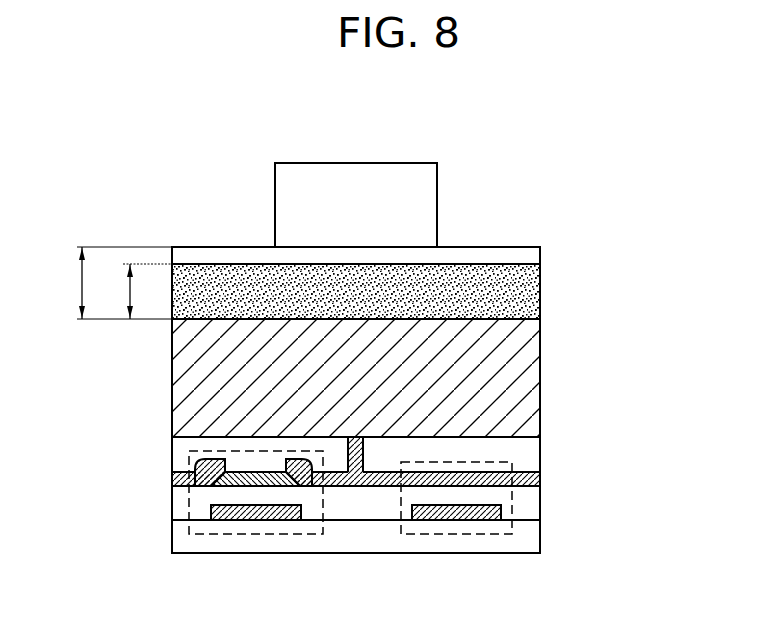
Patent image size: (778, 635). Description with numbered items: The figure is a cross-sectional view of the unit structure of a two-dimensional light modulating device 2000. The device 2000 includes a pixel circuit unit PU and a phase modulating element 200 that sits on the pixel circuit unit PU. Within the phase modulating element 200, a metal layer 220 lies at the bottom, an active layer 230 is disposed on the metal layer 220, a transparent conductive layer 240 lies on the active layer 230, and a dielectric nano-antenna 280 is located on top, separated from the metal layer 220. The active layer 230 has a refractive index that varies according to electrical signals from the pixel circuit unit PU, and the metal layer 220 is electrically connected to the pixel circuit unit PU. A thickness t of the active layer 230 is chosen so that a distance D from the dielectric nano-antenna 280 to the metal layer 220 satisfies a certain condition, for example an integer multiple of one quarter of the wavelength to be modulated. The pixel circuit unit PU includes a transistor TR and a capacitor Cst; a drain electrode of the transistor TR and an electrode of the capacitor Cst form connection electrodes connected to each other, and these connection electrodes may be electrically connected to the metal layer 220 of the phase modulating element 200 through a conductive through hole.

The 2D light modulating device 2000 is at (655, 132).
The dielectric nano-antenna 280 is at (423, 203).
The transparent conductive layer 240 is at (530, 256).
The active layer 230 is at (530, 292).
The metal layer 220 is at (522, 378).
The phase modulating element 200 is at (627, 175).
The pixel circuit unit PU is at (627, 435).
The transistor TR is at (256, 534).
The capacitor Cst is at (455, 534).
The distance D is at (116, 283).
The thickness t is at (142, 291).